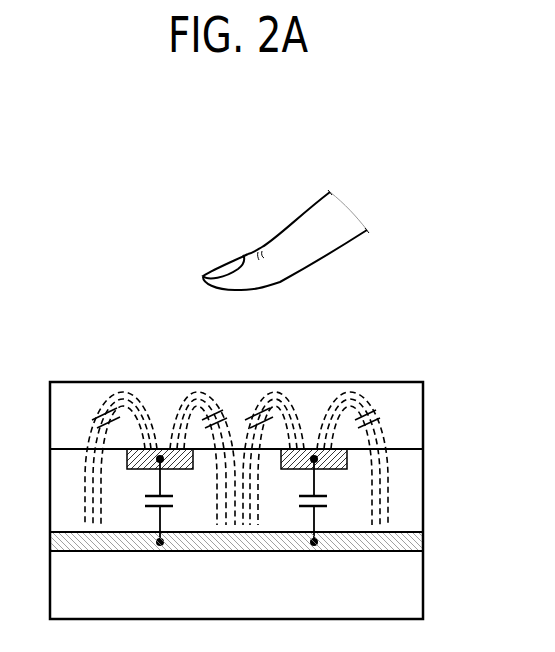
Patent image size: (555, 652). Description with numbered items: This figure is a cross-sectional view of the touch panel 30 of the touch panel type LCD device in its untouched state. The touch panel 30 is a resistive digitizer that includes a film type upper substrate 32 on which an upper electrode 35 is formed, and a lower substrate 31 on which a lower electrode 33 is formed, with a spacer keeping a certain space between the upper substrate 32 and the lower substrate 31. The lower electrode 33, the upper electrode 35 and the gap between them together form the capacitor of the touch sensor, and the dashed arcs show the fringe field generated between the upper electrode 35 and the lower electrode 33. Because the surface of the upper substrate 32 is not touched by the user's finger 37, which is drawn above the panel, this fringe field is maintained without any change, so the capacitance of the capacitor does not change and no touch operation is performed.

The touch panel 30 is at (266, 447).
The lower substrate 31 is at (403, 585).
The upper substrate 32 is at (403, 418).
The lower electrode 33 is at (403, 542).
The upper electrode 35 is at (348, 458).
The finger 37 is at (290, 247).